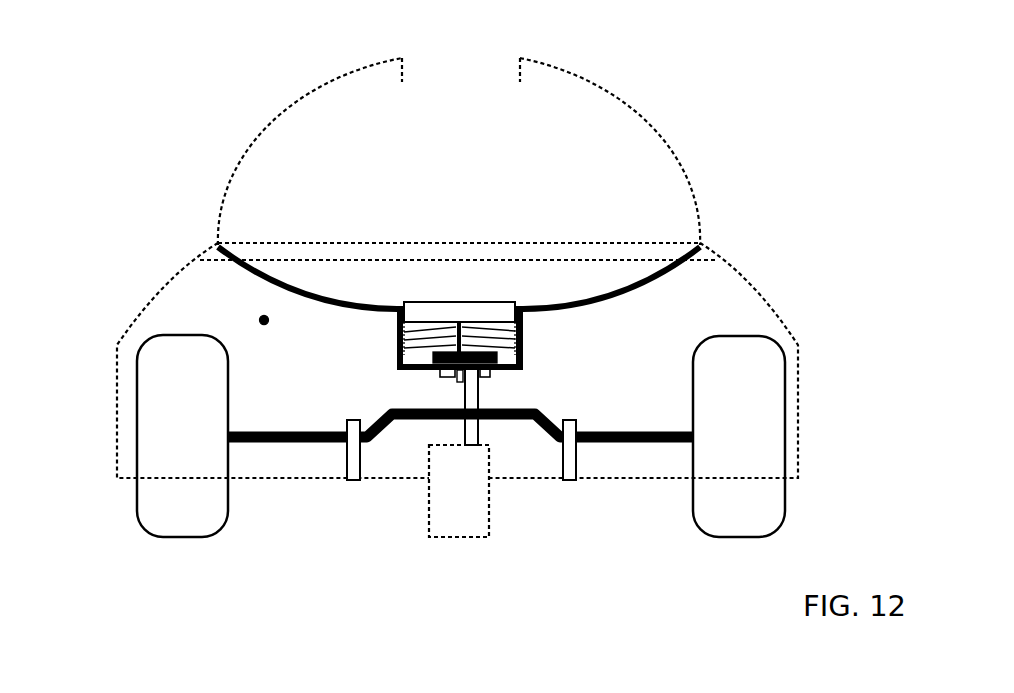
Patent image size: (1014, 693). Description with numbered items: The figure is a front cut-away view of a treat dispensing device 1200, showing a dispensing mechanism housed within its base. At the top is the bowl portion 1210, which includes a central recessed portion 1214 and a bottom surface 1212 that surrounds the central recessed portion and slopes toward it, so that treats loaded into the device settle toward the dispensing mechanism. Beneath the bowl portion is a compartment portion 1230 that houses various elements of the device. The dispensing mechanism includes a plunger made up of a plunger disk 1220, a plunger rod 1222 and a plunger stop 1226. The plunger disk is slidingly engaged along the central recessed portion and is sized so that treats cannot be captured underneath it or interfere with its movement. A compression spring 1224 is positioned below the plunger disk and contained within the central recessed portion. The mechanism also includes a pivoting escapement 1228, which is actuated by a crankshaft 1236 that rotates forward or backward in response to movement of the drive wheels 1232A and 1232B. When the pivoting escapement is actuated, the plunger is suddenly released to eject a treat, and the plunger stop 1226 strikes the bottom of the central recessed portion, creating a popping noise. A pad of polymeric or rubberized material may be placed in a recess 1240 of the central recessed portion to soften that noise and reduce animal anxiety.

The treat dispensing device 1200 is at (100, 42).
The bowl portion 1210 is at (847, 234).
The bottom surface 1212 is at (672, 270).
The central recessed portion 1214 is at (523, 340).
The plunger disk 1220 is at (475, 312).
The plunger rod 1222 is at (462, 378).
The compression spring 1224 is at (437, 325).
The plunger stop 1226 is at (438, 375).
The pivoting escapement 1228 is at (480, 393).
The compartment portion 1230 is at (264, 320).
The drive wheel 1232A is at (182, 436).
The drive wheel 1232B is at (739, 436).
The crankshaft 1236 is at (653, 443).
The recess 1240 is at (447, 353).